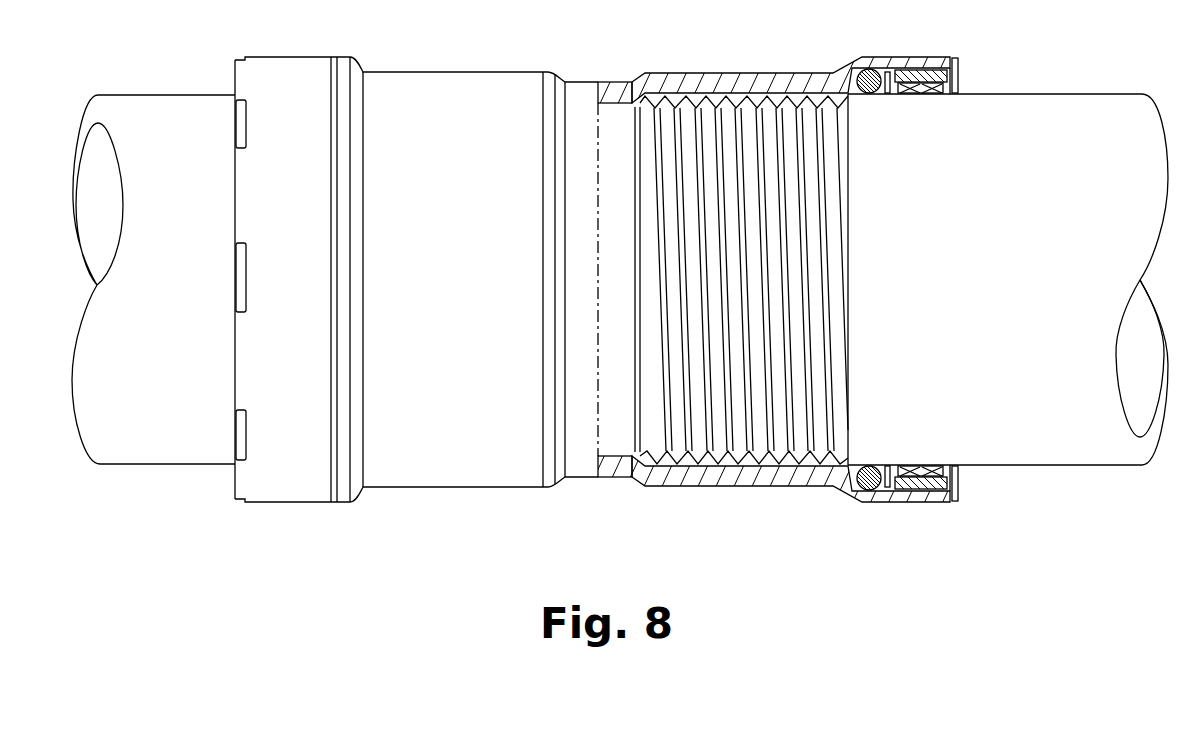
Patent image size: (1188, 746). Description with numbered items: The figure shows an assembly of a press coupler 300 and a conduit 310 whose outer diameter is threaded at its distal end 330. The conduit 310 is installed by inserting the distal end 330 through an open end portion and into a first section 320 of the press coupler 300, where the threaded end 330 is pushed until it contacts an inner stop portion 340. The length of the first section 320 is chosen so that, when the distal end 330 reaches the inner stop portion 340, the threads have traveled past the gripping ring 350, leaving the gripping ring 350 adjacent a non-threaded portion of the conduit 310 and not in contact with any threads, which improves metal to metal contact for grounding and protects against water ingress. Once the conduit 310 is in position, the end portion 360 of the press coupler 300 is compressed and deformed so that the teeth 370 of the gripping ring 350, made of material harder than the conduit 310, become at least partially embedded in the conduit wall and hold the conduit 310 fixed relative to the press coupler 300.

The press coupler 300 is at (591, 46).
The conduit 310 is at (1058, 413).
The first section 320 is at (960, 538).
The distal end 330 is at (750, 84).
The inner stop portion 340 is at (632, 466).
The gripping ring 350 is at (920, 76).
The end portion 360 is at (946, 512).
The teeth 370 is at (937, 462).